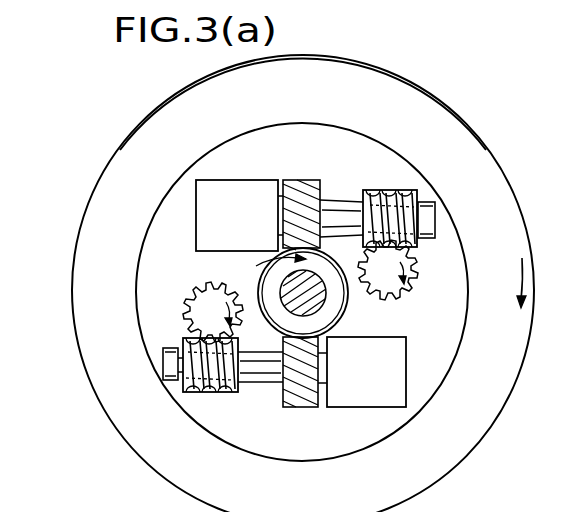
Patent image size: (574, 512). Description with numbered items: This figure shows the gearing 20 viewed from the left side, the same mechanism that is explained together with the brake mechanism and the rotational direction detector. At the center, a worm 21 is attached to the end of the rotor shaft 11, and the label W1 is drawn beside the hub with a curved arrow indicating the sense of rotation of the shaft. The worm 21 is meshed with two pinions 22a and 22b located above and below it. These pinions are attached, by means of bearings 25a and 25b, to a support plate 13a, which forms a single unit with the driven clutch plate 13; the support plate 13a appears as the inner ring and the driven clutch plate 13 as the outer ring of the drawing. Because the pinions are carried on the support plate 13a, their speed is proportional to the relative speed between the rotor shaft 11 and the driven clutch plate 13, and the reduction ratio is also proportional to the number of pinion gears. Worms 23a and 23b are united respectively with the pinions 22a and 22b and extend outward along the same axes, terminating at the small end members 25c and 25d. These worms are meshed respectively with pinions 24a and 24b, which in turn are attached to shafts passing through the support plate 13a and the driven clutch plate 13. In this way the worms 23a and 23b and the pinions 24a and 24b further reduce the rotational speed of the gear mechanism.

The gearing 20 is at (528, 112).
The driven clutch plate 13 is at (347, 73).
The support plate 13a is at (422, 387).
The worm 21 is at (327, 316).
The rotor shaft 11 is at (320, 289).
The angular velocity of shaft W1 is at (258, 266).
The pinion 22a is at (298, 181).
The pinion 22b is at (300, 407).
The worm 23a is at (366, 190).
The worm 23b is at (213, 392).
The pinion 24a is at (388, 295).
The pinion 24b is at (193, 300).
The bearing 25a is at (201, 183).
The bearing 25b is at (375, 397).
The balance weight 25c is at (435, 211).
The balance weight 25d is at (163, 380).